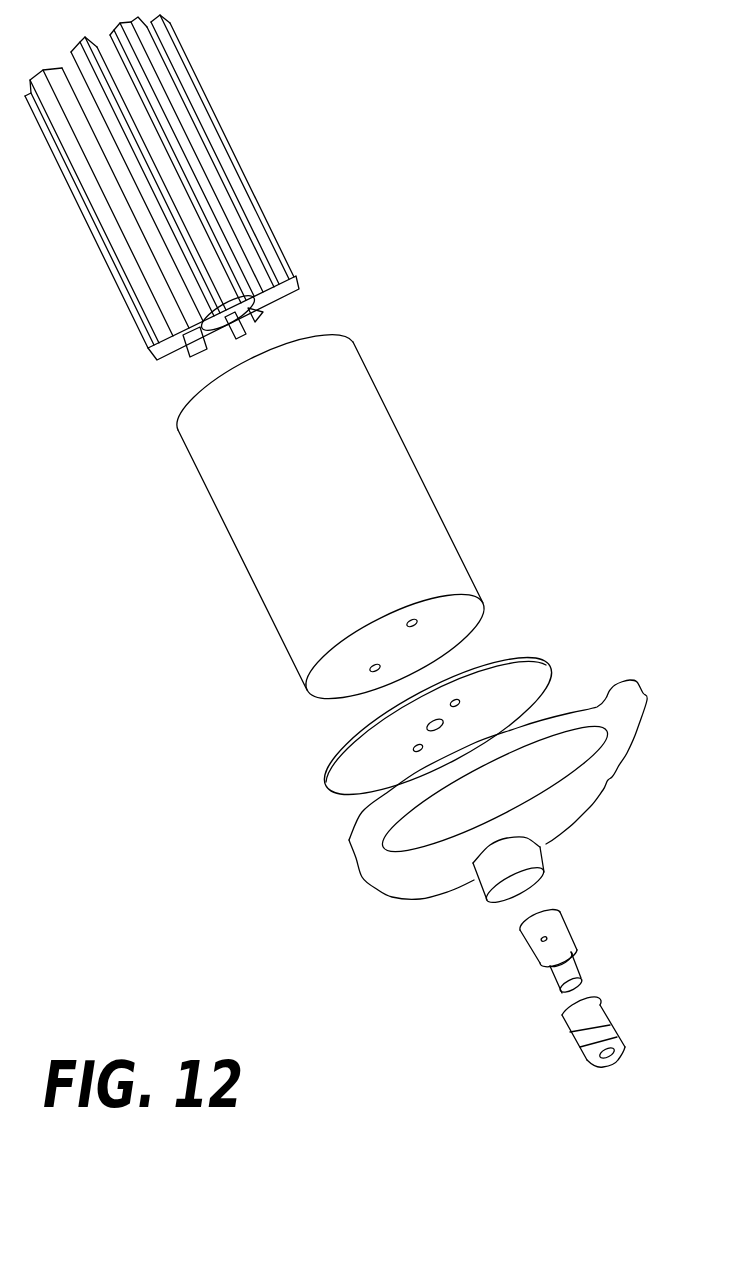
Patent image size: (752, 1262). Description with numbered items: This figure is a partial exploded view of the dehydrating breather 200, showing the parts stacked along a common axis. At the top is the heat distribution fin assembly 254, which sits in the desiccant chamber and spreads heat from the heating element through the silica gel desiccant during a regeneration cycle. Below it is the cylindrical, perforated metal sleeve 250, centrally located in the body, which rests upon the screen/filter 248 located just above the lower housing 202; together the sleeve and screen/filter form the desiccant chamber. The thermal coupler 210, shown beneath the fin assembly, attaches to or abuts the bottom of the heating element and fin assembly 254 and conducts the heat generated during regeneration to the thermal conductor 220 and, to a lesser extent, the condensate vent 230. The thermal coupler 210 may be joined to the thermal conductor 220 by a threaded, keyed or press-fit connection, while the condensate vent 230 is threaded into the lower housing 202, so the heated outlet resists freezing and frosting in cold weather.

The dehydrating breather 200 is at (611, 204).
The lower housing 202 is at (361, 879).
The thermal coupler 210 is at (262, 301).
The thermal conductor 220 is at (519, 943).
The condensate vent 230 is at (570, 1048).
The screen/filter 248 is at (325, 773).
The metal sleeve 250 is at (230, 540).
The heat distribution fin assembly 254 is at (206, 100).